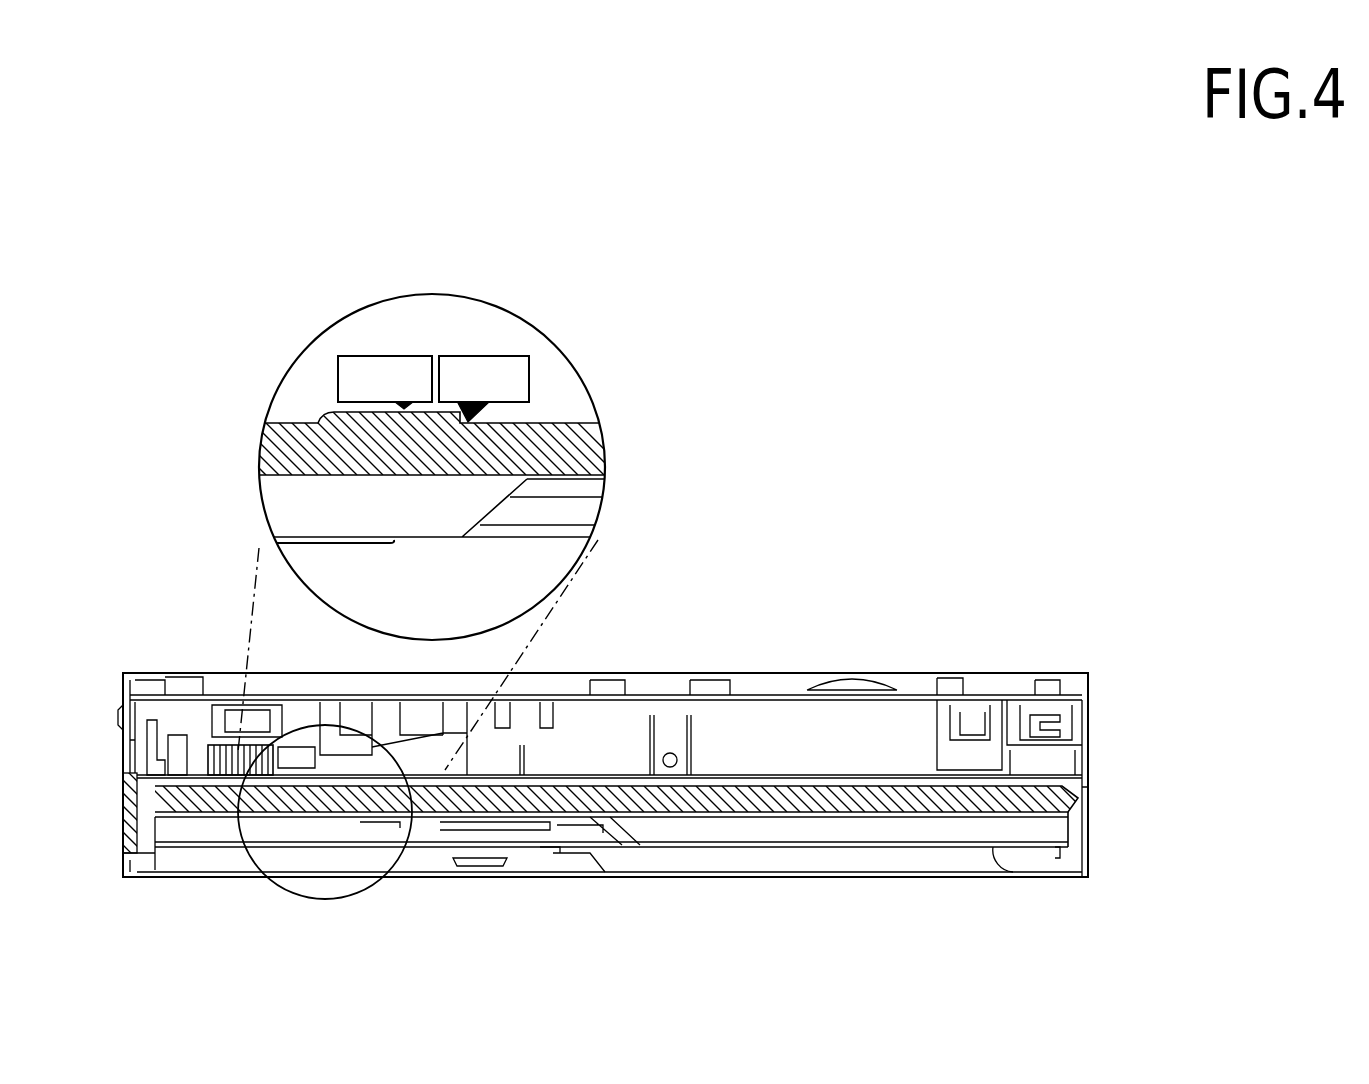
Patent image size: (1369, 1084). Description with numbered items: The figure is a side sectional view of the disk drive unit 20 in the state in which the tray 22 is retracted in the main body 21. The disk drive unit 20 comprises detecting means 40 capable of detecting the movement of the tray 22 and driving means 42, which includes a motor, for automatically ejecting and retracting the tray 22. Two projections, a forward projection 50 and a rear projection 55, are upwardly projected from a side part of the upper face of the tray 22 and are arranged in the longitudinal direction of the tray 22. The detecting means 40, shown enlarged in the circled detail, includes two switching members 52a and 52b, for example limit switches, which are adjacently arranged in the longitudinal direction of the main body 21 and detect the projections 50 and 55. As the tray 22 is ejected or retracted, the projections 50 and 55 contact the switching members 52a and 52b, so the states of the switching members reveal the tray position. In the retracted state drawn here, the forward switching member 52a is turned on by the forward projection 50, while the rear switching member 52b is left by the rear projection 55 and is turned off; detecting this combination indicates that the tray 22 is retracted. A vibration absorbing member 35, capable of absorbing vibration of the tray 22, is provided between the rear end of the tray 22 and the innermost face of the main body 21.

The disk drive unit 20 is at (972, 587).
The main body 21 is at (1053, 680).
The tray 22 is at (735, 783).
The vibration absorbing member 35 is at (1083, 797).
The detecting means 40 is at (407, 389).
The driving means 42 is at (212, 750).
The forward projection 50 is at (326, 415).
The forward switching member 52a is at (338, 357).
The rear switching member 52b is at (524, 360).
The rear projection 55 is at (1040, 778).